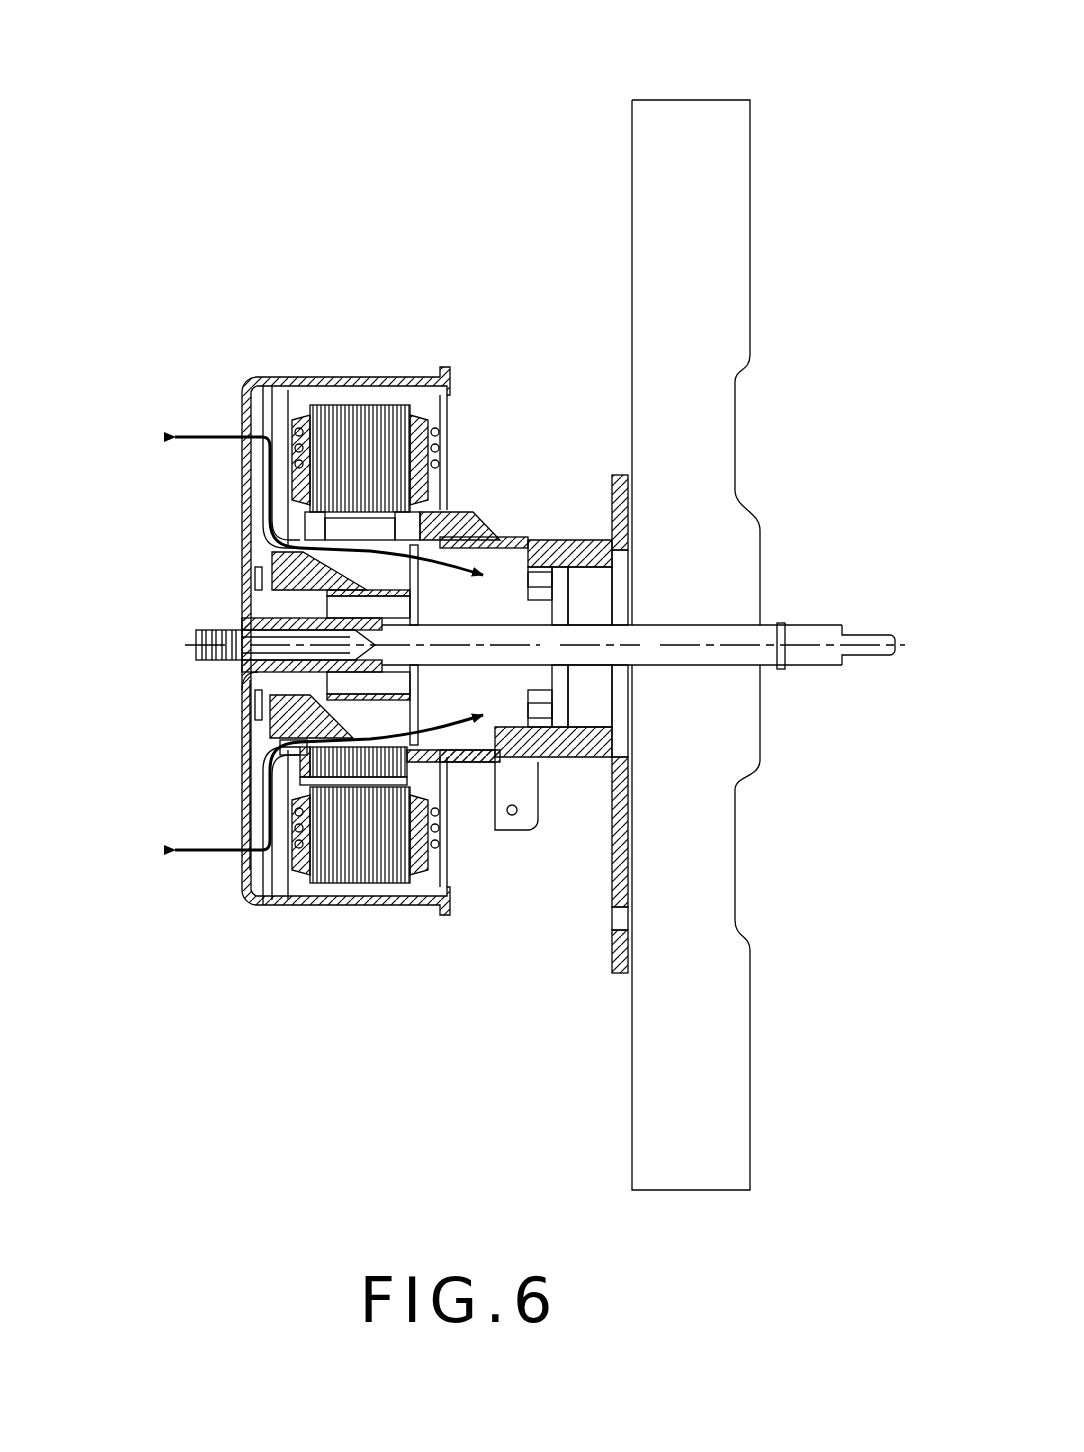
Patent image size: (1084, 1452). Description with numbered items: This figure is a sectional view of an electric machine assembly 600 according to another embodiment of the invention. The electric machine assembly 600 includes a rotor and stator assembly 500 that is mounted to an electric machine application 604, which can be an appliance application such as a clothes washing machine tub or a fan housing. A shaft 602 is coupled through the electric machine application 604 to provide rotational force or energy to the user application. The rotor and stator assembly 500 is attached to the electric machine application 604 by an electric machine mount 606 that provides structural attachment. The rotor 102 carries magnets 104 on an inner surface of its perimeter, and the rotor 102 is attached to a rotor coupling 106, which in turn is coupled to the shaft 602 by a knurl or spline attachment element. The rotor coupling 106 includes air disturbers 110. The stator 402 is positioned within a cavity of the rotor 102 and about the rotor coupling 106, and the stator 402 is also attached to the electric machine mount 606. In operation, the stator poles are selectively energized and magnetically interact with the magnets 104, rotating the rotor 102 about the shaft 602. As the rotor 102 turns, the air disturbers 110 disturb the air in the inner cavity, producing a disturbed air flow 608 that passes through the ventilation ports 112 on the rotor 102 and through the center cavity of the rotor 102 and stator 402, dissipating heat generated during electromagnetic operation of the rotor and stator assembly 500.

The electric machine assembly 600 is at (490, 54).
The rotor and stator assembly 500 is at (220, 323).
The rotor 102 is at (248, 895).
The magnets 104 is at (373, 890).
The rotor coupling 106 is at (250, 682).
The air disturbers 110 is at (255, 576).
The ventilation ports 112 is at (257, 443).
The stator 402 is at (360, 848).
The shaft 602 is at (230, 652).
The electric machine application 604 is at (762, 548).
The electric machine mount 606 is at (575, 540).
The disturbed air flow 608 is at (248, 430).